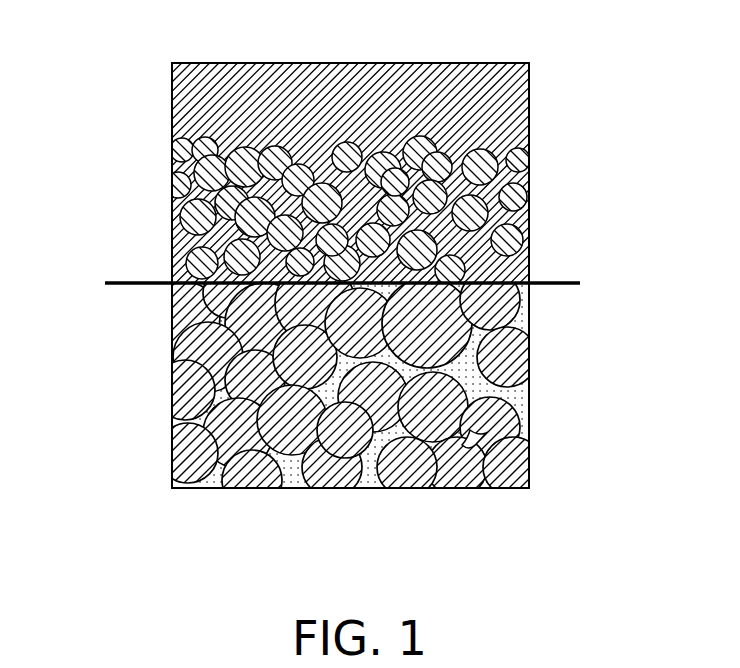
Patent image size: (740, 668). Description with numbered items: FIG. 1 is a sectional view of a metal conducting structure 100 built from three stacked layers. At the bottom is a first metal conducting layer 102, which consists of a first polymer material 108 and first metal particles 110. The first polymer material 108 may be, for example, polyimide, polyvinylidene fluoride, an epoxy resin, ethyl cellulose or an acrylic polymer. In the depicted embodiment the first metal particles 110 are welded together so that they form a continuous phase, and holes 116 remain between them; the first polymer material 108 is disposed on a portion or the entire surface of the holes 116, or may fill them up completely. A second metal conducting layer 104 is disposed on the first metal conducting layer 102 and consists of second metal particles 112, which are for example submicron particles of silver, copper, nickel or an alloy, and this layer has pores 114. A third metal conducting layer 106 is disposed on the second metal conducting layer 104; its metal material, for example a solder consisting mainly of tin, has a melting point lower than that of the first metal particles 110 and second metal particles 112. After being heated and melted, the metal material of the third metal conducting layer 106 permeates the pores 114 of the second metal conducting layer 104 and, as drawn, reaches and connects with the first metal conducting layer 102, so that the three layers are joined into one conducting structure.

The metal conducting structure 100 is at (490, 42).
The first metal conducting layer 102 is at (82, 365).
The second metal conducting layer 104 is at (163, 147).
The third metal conducting layer 106 is at (178, 103).
The first polymer material 108 is at (175, 392).
The first metal particles 110 is at (175, 432).
The second metal particles 112 is at (518, 241).
The pores 114 is at (397, 182).
The holes 116 is at (473, 441).